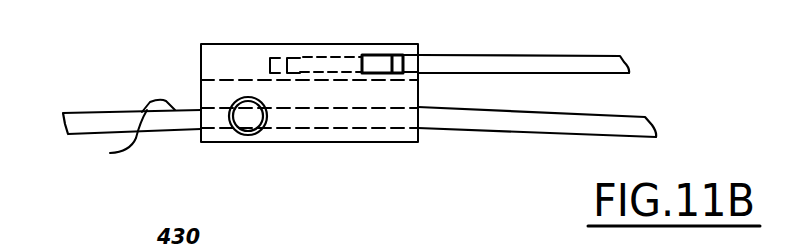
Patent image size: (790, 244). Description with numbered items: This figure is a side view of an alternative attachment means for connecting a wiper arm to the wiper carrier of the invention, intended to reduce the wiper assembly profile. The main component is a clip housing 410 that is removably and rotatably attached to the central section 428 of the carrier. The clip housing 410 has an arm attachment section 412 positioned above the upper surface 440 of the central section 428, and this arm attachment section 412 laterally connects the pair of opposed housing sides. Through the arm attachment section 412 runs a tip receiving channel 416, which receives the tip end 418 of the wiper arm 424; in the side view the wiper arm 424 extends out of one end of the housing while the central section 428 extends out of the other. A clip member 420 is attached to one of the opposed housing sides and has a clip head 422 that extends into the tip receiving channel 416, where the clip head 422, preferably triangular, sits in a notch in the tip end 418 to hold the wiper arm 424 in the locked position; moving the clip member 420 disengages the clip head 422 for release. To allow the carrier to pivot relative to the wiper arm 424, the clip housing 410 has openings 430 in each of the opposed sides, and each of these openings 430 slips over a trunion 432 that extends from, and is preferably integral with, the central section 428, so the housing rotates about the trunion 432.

The clip housing 410 is at (211, 31).
The arm attachment section 412 is at (504, 175).
The tip receiving channel 416 is at (277, 58).
The tip end 418 is at (305, 60).
The clip member 420 is at (122, 235).
The clip head 422 is at (293, 234).
The wiper arm 424 is at (599, 60).
The central section 428 is at (106, 113).
The openings 430 is at (255, 135).
The trunion 432 is at (246, 122).
The upper surface 440 is at (105, 141).